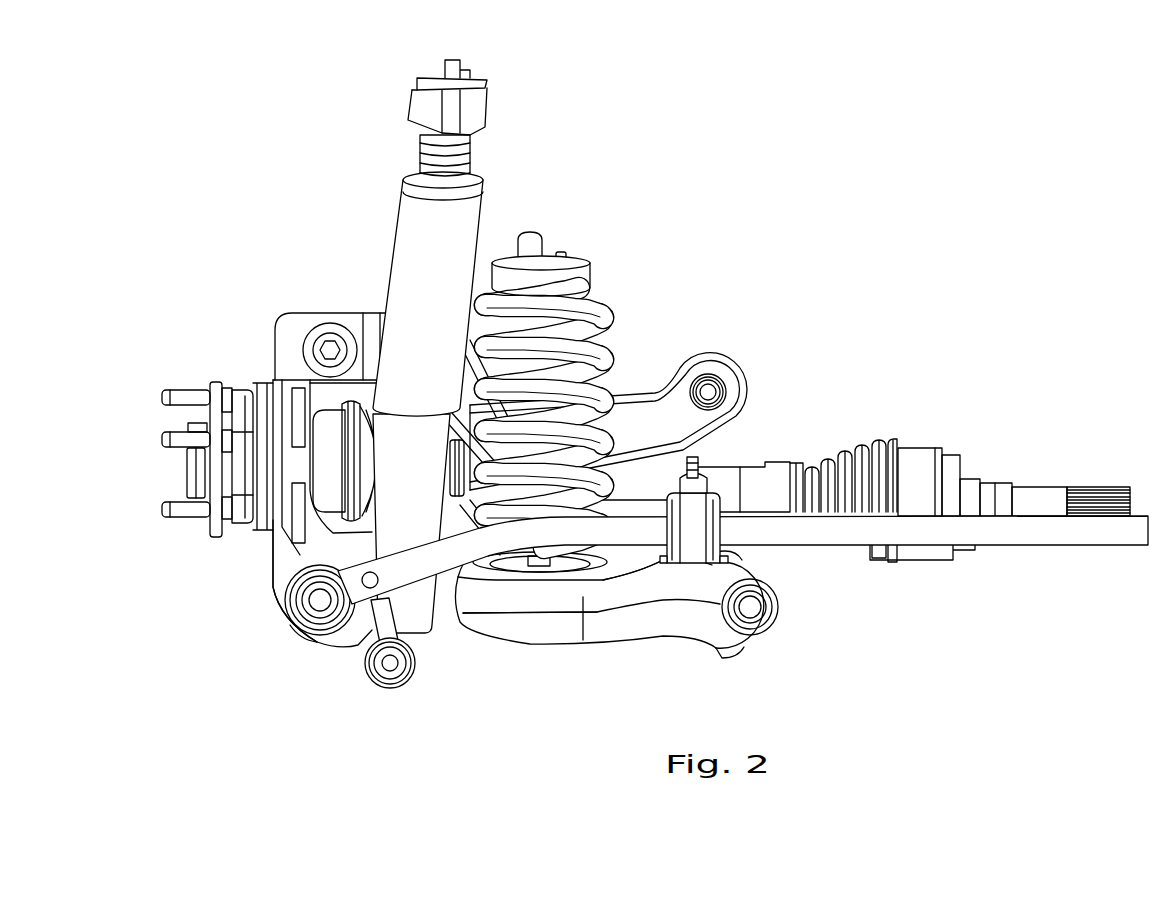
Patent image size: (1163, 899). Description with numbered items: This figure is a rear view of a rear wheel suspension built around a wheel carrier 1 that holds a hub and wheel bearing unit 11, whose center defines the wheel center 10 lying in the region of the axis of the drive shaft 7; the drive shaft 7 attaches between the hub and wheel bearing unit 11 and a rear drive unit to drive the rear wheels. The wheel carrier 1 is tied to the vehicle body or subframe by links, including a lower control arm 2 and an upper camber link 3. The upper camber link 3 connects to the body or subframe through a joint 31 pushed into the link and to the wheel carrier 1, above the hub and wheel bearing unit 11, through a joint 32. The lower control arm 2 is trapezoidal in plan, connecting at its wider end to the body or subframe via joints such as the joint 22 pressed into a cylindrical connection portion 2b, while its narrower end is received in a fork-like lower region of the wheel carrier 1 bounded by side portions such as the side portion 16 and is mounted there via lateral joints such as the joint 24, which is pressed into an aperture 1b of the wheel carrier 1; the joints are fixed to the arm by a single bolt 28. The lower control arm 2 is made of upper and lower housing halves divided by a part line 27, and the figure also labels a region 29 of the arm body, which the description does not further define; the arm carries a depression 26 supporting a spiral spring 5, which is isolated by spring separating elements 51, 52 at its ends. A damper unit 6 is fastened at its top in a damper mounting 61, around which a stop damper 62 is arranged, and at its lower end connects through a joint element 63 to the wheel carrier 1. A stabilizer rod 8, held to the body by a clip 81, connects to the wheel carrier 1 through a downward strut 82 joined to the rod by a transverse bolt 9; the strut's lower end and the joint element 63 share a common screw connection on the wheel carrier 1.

The wheel carrier 1 is at (269, 308).
The aperture 1b is at (303, 602).
The lower control arm 2 is at (595, 645).
The connection portion 2b is at (793, 600).
The upper camber link 3 is at (640, 387).
The spiral spring 5 is at (603, 320).
The damper unit 6 is at (388, 216).
The drive shaft 7 is at (750, 483).
The stabilizer rod 8 is at (812, 530).
The transverse bolt 9 is at (390, 670).
The wheel center 10 is at (187, 462).
The hub and wheel bearing unit 11 is at (195, 472).
The side portion 16 is at (270, 580).
The joint 22 is at (762, 625).
The joint 24 is at (300, 595).
The depression 26 is at (483, 567).
The part line 27 is at (508, 613).
The bolt 28 is at (297, 617).
The rear portion of lower arm 29 is at (650, 613).
The joint 31 is at (708, 392).
The joint 32 is at (330, 350).
The spring separating element 51 is at (543, 275).
The spring separating element 52 is at (512, 568).
The damper mounting 61 is at (432, 82).
The stop damper 62 is at (420, 146).
The joint element 63 is at (417, 667).
The clip 81 is at (683, 540).
The downward strut 82 is at (367, 632).